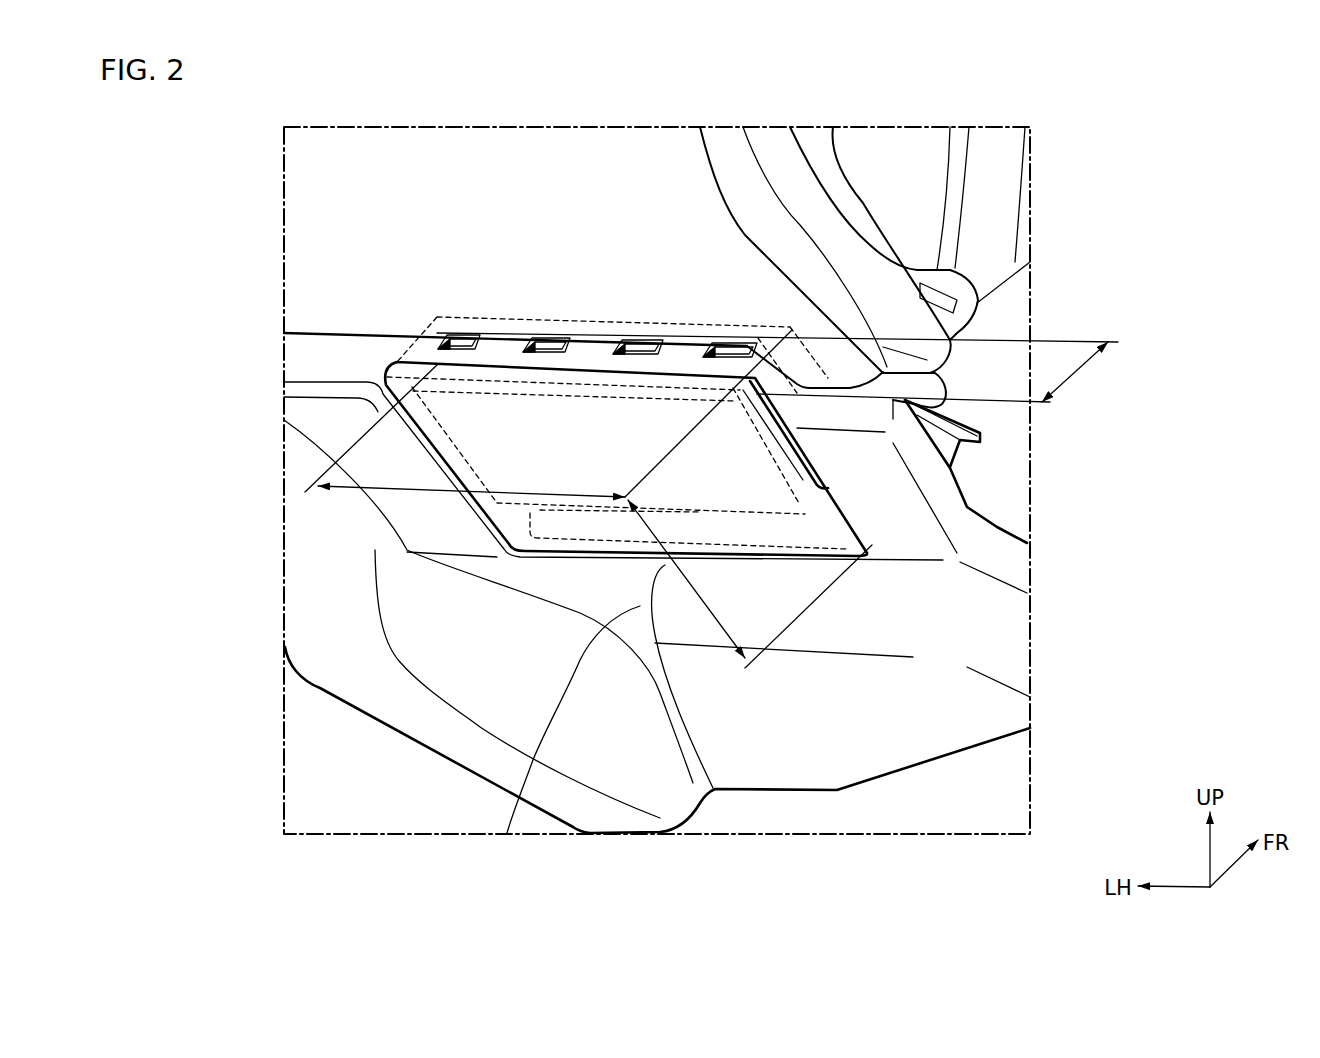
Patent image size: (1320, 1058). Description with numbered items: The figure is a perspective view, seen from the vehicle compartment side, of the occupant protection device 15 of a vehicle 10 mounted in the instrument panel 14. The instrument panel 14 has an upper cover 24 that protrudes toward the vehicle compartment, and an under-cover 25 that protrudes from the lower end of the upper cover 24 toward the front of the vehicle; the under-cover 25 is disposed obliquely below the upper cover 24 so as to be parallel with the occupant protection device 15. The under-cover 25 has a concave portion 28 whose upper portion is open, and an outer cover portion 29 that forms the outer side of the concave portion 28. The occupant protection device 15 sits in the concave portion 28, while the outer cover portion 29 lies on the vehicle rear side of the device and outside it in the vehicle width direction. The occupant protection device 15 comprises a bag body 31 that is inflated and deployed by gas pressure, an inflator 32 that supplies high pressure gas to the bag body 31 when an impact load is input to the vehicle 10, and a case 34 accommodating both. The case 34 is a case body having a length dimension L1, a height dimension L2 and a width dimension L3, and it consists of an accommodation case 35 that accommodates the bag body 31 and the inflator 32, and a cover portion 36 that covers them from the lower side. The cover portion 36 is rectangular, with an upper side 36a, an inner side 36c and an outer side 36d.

The vehicle 10 is at (404, 166).
The instrument panel 14 is at (313, 185).
The occupant protection device 15 is at (455, 505).
The upper cover 24 is at (313, 268).
The under-cover 25 is at (507, 833).
The concave portion 28 is at (713, 788).
The outer cover portion 29 is at (887, 505).
The bag body 31 is at (484, 478).
The inflator 32 is at (552, 527).
The case 34 is at (230, 336).
The accommodation case 35 is at (407, 342).
The cover portion 36 is at (423, 437).
The upper side 36a is at (573, 377).
The inner side 36c is at (462, 498).
The outer side 36d is at (798, 466).
The length dimension L1 is at (499, 489).
The height dimension L2 is at (750, 584).
The width dimension L3 is at (935, 372).